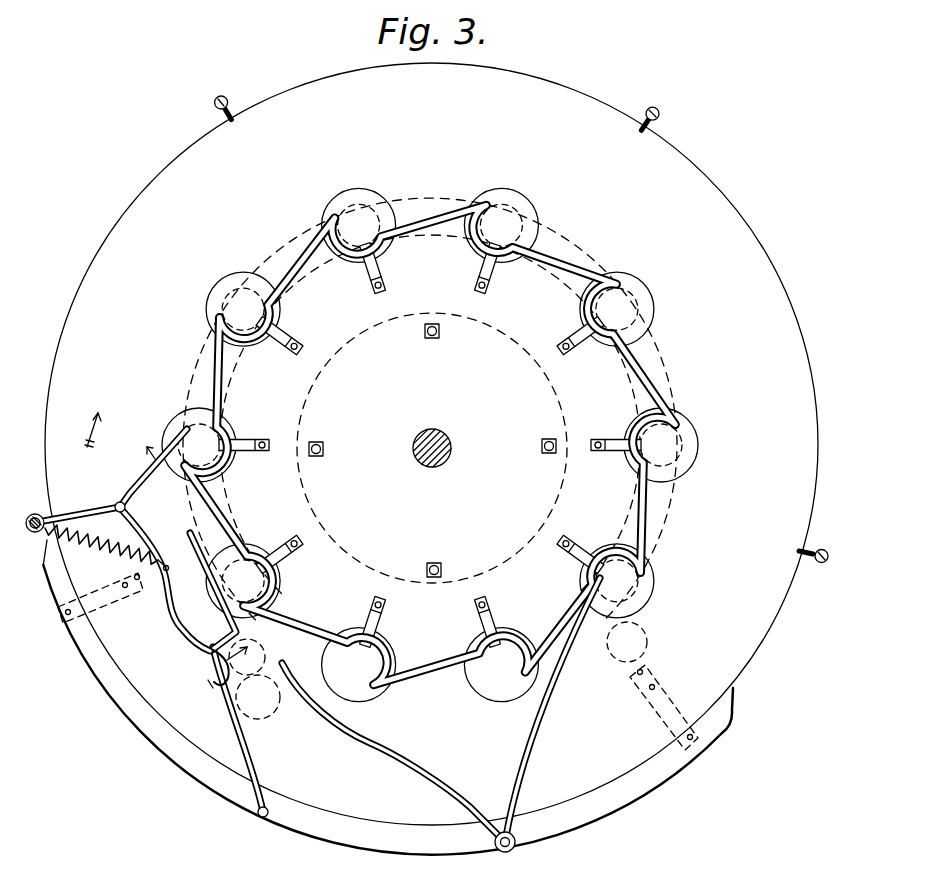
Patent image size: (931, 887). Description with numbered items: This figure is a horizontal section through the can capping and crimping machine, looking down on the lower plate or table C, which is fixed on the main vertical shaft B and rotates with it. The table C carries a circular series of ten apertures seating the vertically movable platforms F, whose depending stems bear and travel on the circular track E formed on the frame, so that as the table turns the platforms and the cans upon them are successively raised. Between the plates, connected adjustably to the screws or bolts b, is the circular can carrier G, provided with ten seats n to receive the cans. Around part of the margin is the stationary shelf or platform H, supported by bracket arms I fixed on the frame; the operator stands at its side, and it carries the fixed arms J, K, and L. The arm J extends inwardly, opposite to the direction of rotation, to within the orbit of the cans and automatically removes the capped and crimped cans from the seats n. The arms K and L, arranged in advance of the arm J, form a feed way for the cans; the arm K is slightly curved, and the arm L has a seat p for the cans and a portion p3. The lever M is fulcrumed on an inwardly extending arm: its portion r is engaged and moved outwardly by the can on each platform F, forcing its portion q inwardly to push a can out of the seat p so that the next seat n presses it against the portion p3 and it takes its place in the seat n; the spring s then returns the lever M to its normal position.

The lower plate or table C is at (431, 444).
The marginal shelf or platform H is at (336, 822).
The pins P is at (662, 112).
The circular track E is at (190, 350).
The main vertical shaft B is at (452, 448).
The platforms F is at (337, 660).
The seats n is at (236, 466).
The screws b is at (560, 349).
The circular can carrier G is at (636, 370).
The bracket arms I is at (92, 597).
The arm L is at (250, 757).
The arm K is at (408, 764).
The arm J is at (524, 758).
The portion of arm L p3 is at (200, 536).
The portion of lever M q is at (168, 606).
The portion of lever M r is at (106, 472).
The spring s is at (85, 530).
The lever M is at (158, 570).
The seat p is at (212, 653).